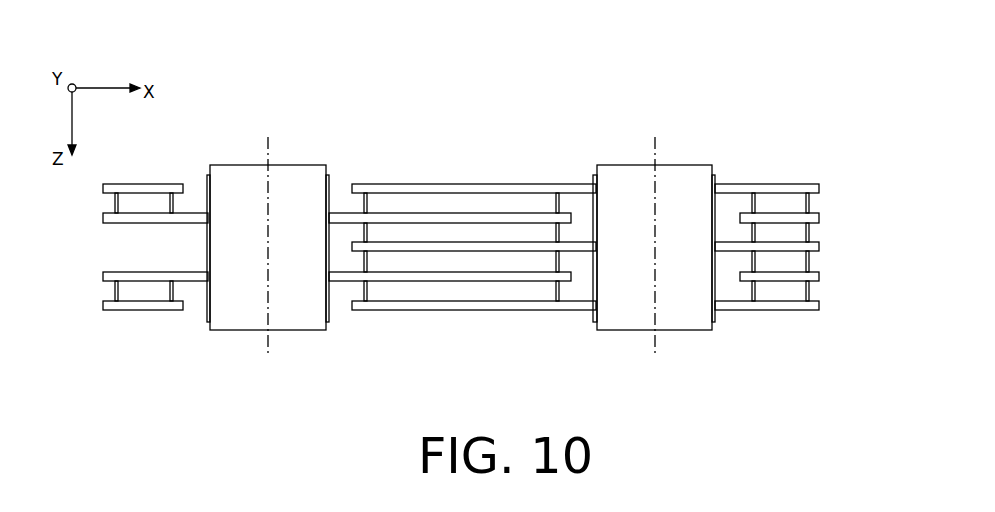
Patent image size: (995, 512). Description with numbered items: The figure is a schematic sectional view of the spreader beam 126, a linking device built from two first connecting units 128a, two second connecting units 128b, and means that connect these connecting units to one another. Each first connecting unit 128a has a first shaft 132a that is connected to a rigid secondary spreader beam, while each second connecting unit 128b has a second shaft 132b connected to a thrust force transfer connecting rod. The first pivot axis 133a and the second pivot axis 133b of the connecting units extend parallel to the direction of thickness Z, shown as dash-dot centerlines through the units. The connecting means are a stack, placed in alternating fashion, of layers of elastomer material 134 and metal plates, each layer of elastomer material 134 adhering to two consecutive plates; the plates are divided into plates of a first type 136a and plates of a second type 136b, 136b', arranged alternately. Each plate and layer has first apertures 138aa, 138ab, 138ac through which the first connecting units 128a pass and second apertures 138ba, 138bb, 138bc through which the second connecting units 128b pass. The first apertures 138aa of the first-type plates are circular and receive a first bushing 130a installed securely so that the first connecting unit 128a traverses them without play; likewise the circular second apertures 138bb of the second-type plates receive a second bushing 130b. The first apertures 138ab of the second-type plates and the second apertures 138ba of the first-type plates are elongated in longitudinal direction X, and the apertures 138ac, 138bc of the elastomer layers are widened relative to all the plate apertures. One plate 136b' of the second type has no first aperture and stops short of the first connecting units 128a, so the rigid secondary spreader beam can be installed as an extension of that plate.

The spreader beam 126 is at (226, 74).
The first connecting unit 128a is at (281, 160).
The second connecting unit 128b is at (667, 160).
The first bushing 130a is at (330, 316).
The second bushing 130b is at (596, 310).
The first shaft 132a is at (328, 176).
The second shaft 132b is at (597, 324).
The first pivot axis 133a is at (264, 138).
The second pivot axis 133b is at (653, 138).
The layer of elastomer material 134 is at (562, 285).
The plate of the first type 136a is at (821, 220).
The plate of the second type 136b is at (768, 256).
The plate of the second type 136b' is at (799, 185).
The first aperture of plate of the first type 138aa is at (209, 220).
The first aperture of plate of the second type 138ab is at (187, 184).
The first aperture of layer of elastomer material 138ac is at (352, 196).
The second aperture of plate of the first type 138ba is at (741, 216).
The second aperture of plate of the second type 138bb is at (597, 194).
The second aperture of layer of elastomer material 138bc is at (751, 203).